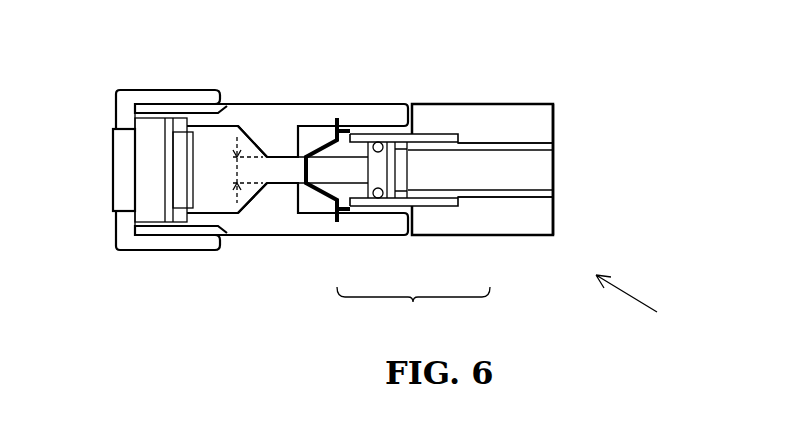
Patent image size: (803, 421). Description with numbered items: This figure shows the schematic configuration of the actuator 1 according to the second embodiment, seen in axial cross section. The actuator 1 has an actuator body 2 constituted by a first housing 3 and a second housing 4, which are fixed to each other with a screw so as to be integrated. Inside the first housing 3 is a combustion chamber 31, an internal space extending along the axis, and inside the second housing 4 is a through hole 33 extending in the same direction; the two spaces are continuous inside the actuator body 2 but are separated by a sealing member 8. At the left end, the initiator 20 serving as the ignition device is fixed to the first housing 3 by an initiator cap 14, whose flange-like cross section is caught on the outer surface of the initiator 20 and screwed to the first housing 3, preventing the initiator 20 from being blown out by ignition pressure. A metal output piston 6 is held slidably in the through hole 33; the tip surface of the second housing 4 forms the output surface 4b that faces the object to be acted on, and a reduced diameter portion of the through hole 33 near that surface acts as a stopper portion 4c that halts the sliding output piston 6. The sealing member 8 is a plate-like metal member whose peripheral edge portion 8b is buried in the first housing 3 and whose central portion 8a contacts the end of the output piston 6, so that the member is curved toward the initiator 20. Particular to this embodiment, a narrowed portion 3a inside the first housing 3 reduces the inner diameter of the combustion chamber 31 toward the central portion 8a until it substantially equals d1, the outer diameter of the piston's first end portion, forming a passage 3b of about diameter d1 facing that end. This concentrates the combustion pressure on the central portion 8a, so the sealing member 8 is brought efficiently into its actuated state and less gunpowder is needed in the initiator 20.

The actuator 1 is at (680, 325).
The actuator body 2 is at (413, 309).
The first housing 3 is at (271, 147).
The narrowed portion 3a is at (270, 197).
The passage 3b is at (277, 135).
The second housing 4 is at (498, 156).
The output surface 4b is at (553, 207).
The stopper portion 4c is at (540, 140).
The output piston 6 is at (505, 157).
The sealing member 8 is at (338, 172).
The central portion 8a is at (296, 200).
The peripheral edge portion 8b is at (335, 126).
The initiator cap 14 is at (133, 90).
The initiator 20 is at (113, 164).
The combustion chamber 31 is at (220, 140).
The through hole 33 is at (438, 142).
The diameter of the first end portion d1 is at (235, 170).